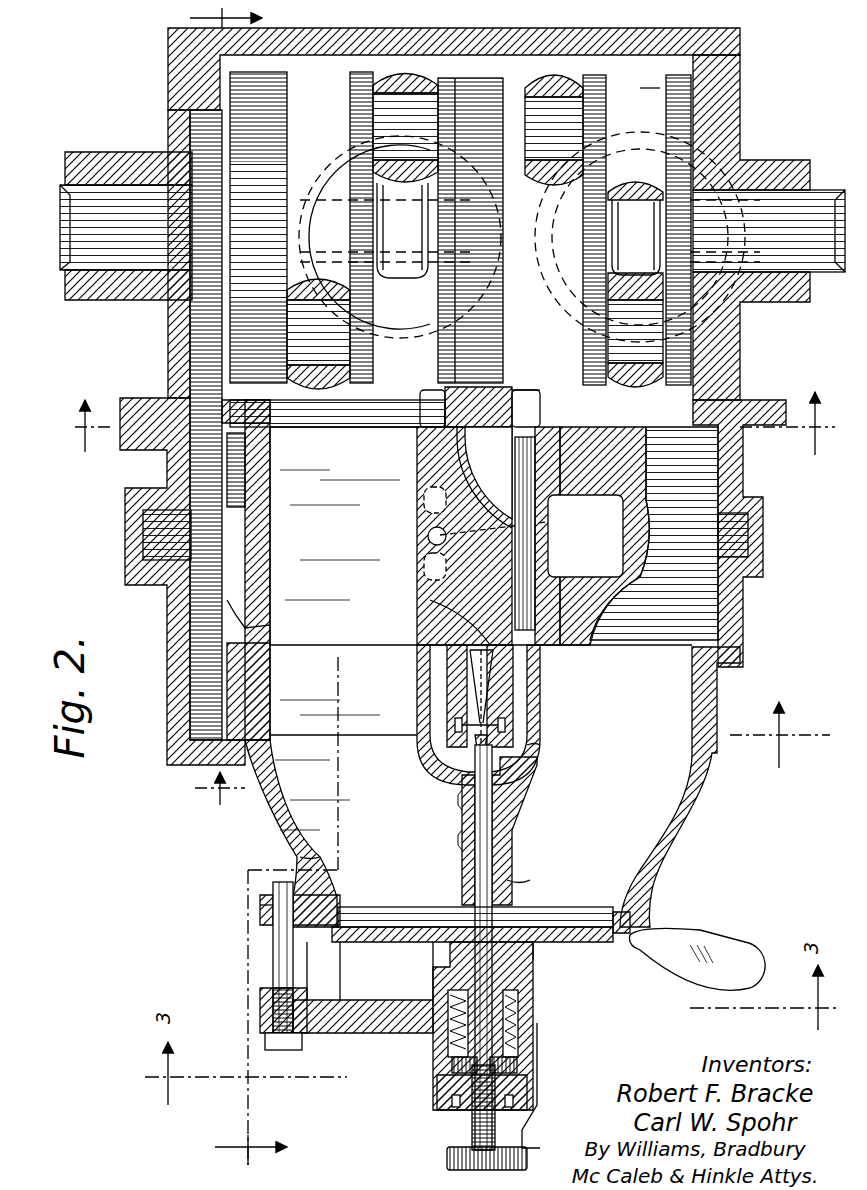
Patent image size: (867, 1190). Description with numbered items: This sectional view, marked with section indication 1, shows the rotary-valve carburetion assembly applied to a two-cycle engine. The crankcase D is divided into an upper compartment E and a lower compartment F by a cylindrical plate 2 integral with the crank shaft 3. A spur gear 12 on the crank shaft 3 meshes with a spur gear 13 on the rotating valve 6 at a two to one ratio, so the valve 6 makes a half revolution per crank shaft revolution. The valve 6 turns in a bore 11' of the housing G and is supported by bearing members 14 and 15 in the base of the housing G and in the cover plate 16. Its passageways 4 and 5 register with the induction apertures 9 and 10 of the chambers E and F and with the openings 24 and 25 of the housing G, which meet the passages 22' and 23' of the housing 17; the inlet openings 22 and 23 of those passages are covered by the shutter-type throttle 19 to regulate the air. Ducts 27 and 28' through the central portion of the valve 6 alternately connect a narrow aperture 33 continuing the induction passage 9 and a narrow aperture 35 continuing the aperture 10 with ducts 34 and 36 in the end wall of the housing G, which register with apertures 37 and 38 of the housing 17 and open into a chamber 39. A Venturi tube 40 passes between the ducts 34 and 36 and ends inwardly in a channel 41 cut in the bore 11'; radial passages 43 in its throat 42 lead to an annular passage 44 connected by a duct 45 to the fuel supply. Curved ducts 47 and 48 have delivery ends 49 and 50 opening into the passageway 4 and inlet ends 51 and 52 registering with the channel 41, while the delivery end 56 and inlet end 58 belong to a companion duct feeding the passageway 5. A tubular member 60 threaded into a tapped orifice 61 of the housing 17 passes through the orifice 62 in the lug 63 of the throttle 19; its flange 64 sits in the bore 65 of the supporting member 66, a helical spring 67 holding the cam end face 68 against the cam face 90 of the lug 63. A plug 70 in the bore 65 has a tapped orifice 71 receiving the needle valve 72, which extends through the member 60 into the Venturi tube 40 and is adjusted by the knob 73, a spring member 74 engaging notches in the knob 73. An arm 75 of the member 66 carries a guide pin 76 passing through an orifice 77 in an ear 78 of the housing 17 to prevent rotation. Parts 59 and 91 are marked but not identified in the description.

The crankcase D is at (740, 50).
The upper crankcase compartment E is at (305, 128).
The lower crankcase compartment F is at (638, 88).
The housing G is at (710, 668).
The section line 1- 1 is at (227, 586).
The intermediate cylindrical plate 2 is at (495, 292).
The crank shaft 3 is at (110, 205).
The passageway 4 is at (366, 640).
The passageway 5 is at (622, 648).
The rotating valve 6 is at (263, 538).
The induction aperture 9 is at (312, 417).
The induction aperture 10 is at (576, 400).
The bore 11' is at (472, 533).
The spur gear 12 is at (208, 167).
The spur gear 13 is at (208, 702).
The bearing member 14 is at (140, 537).
The bearing member 15 is at (761, 538).
The cover plate 16 is at (177, 748).
The housing 17 is at (270, 813).
The throttle 19 is at (610, 947).
The inlet opening 22 is at (472, 906).
The passage 22' is at (332, 832).
The inlet opening 23 is at (597, 901).
The passage 23' is at (690, 894).
The opening 24 is at (332, 911).
The opening 25 is at (481, 673).
The duct 27 is at (417, 532).
The duct 28' is at (521, 531).
The narrow aperture 33 is at (445, 392).
The duct 34 is at (422, 717).
The narrow aperture 35 is at (525, 395).
The duct 36 is at (540, 680).
The aperture 37 is at (430, 750).
The aperture 38 is at (545, 738).
The chamber 39 is at (520, 788).
The Venturi tube 40 is at (540, 658).
The channel 41 is at (417, 590).
The throat 42 is at (552, 780).
The radial passages 43 is at (417, 680).
The annular passage 44 is at (540, 722).
The duct 45 is at (500, 583).
The duct 47 is at (417, 577).
The duct 48 is at (417, 437).
The delivery end 49 is at (417, 512).
The delivery end 50 is at (417, 462).
The inlet end 51 is at (530, 540).
The inlet end 52 is at (447, 478).
The delivery end 56 is at (598, 536).
The inlet end 58 is at (477, 527).
The pin 59 is at (515, 1080).
The tubular member 60 is at (470, 862).
The tapped orifice 61 is at (465, 817).
The central orifice 62 is at (505, 888).
The projecting lug 63 is at (443, 970).
The annular flange 64 is at (513, 1050).
The central bore 65 is at (440, 1077).
The needle valve supporting member 66 is at (527, 1007).
The helical spring 67 is at (523, 993).
The end face 68 is at (527, 963).
The plug 70 is at (457, 1100).
The tapped orifice 71 is at (463, 1103).
The needle valve 72 is at (462, 847).
The knob 73 is at (443, 1157).
The spring member 74 is at (527, 1107).
The arm 75 is at (373, 1022).
The guide pin 76 is at (288, 950).
The orifice 77 is at (300, 903).
The ear 78 is at (277, 915).
The cam face 90 is at (348, 990).
The tip 91 is at (478, 757).